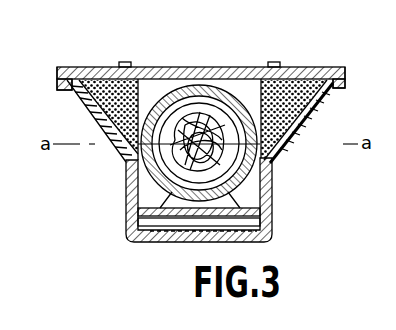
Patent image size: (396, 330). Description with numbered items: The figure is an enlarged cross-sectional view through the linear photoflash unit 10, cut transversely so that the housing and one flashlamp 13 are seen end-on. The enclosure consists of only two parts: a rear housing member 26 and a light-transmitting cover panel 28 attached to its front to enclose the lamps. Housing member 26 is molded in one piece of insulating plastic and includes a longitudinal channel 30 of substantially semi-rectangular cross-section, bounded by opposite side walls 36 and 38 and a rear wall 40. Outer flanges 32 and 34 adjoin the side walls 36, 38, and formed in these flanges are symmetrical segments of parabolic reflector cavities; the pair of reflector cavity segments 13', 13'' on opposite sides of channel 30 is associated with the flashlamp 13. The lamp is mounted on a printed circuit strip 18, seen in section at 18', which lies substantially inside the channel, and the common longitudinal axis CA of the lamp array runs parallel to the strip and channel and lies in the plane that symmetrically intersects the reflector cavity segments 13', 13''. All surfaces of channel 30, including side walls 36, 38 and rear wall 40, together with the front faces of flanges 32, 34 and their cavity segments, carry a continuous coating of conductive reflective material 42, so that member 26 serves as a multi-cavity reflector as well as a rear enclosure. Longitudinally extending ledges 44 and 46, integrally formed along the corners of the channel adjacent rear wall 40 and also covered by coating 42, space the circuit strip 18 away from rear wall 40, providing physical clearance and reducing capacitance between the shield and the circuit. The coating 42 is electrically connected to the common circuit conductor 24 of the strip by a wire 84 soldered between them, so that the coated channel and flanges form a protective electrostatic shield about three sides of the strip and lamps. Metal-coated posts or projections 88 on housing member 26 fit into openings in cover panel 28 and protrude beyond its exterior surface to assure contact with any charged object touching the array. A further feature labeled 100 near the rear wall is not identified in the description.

The linear photoflash unit 10 is at (75, 46).
The flashlamp 13 is at (218, 102).
The parabolic reflector cavity segment 13' is at (304, 121).
The parabolic reflector cavity segment 13'' is at (71, 113).
The printed circuit strip 18 is at (370, 242).
The printed circuit strip 18' is at (239, 251).
The common circuit conductor 24 is at (268, 200).
The rear housing member 26 is at (114, 246).
The light-transmitting cover panel 28 is at (152, 68).
The longitudinal channel 30 is at (152, 96).
The outer flange 32 is at (343, 87).
The outer flange 34 is at (55, 92).
The side wall 36 is at (269, 103).
The side wall 38 is at (160, 97).
The rear wall 40 is at (138, 236).
The conductive reflective coating 42 is at (56, 68).
The ledge 44 is at (262, 224).
The ledge 46 is at (130, 230).
The wire 84 is at (273, 173).
The metal-coated projection 88 is at (124, 62).
The plate 100 is at (199, 231).
The common longitudinal axis CA is at (203, 90).